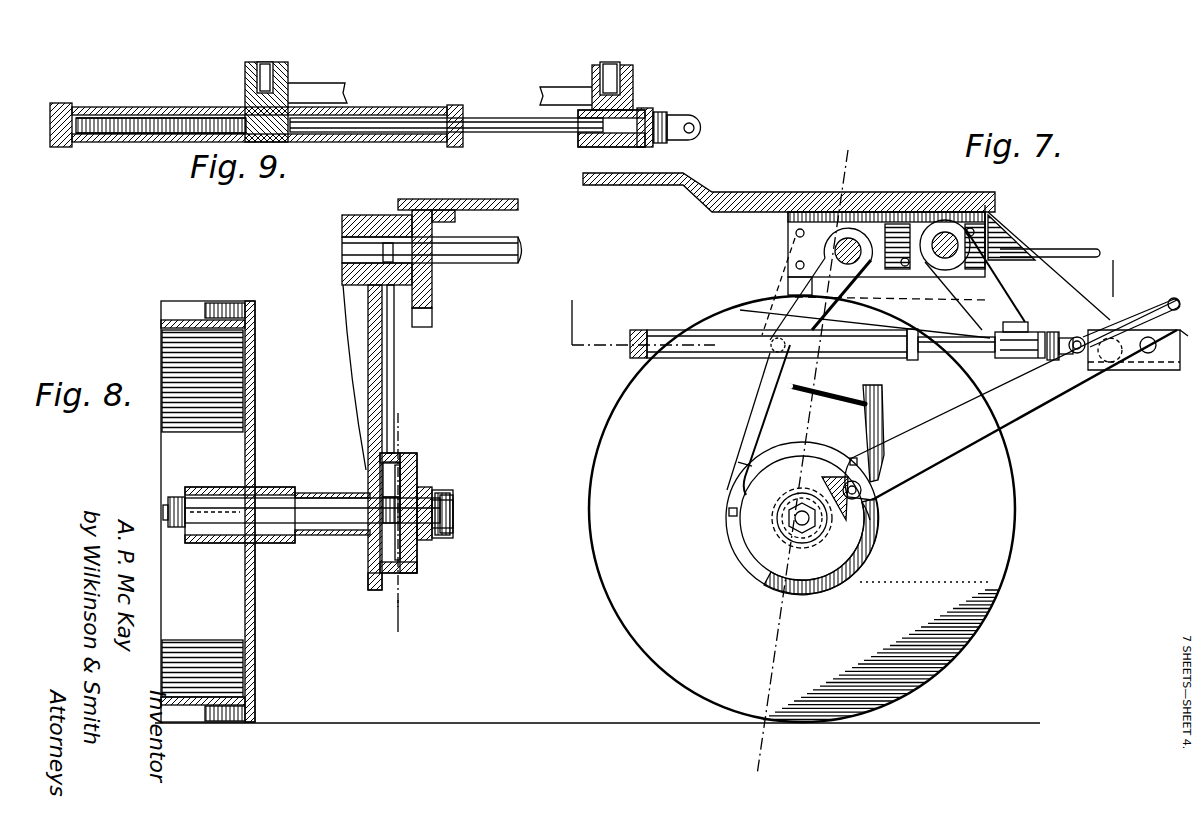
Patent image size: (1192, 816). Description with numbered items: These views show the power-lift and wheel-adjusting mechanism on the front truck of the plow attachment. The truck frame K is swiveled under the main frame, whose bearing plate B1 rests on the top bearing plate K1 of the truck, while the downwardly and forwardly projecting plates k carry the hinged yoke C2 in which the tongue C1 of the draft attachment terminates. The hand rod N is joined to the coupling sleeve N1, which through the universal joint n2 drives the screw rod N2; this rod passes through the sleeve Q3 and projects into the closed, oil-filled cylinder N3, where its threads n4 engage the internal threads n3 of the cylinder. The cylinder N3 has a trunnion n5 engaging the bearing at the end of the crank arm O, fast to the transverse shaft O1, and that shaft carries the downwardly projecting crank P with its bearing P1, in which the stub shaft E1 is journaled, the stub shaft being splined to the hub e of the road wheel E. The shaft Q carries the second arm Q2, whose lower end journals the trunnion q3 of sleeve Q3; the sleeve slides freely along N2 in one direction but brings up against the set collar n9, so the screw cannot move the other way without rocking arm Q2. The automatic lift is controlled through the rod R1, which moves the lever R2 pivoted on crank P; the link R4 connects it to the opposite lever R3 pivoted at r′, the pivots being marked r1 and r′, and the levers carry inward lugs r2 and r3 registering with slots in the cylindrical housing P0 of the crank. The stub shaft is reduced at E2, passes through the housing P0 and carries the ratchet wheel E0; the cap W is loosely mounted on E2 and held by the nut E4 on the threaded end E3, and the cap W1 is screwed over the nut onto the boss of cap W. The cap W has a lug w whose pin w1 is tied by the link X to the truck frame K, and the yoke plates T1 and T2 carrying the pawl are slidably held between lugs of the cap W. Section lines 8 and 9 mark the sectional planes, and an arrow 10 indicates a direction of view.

In FIG. 9, the trunnion n5 is at (257, 58).
In FIG. 7, the trunnion n5 is at (770, 358).
In FIG. 9, the screw threads n3 is at (247, 112).
In FIG. 9, the screw threads n4 is at (110, 138).
In FIG. 9, the crank arm O is at (290, 78).
In FIG. 7, the crank arm O is at (812, 287).
In FIG. 9, the closed cylinder N3 is at (357, 136).
In FIG. 7, the closed cylinder N3 is at (672, 328).
In FIG. 9, the second arm Q2 is at (547, 87).
In FIG. 7, the second arm Q2 is at (1018, 320).
In FIG. 9, the trunnion q3 is at (620, 60).
In FIG. 9, the set collar n9 is at (657, 108).
In FIG. 7, the set collar n9 is at (1062, 330).
In FIG. 9, the universal joint n2 is at (687, 118).
In FIG. 7, the universal joint n2 is at (1078, 356).
In FIG. 9, the rod (screw) N2 is at (528, 128).
In FIG. 7, the rod (screw) N2 is at (958, 355).
In FIG. 9, the sleeve Q3 is at (593, 147).
In FIG. 7, the sleeve Q3 is at (1015, 360).
In FIG. 8, the top bearing plate K1 is at (470, 170).
In FIG. 7, the top bearing plate K1 is at (995, 205).
In FIG. 8, the transverse shaft O1 is at (488, 265).
In FIG. 7, the transverse shaft O1 is at (835, 245).
In FIG. 8, the truck frame K is at (432, 280).
In FIG. 7, the truck frame K is at (788, 215).
In FIG. 8, the plates k is at (432, 325).
In FIG. 7, the plates k is at (1015, 233).
In FIG. 8, the lever R2 is at (395, 375).
In FIG. 7, the lever R2 is at (884, 425).
In FIG. 8, the link R4 is at (398, 397).
In FIG. 7, the link R4 is at (830, 396).
In FIG. 8, the crank arm P is at (392, 420).
In FIG. 7, the crank arm P is at (760, 548).
In FIG. 8, the cylindrical housing P0 is at (403, 440).
In FIG. 7, the cylindrical housing P0 is at (855, 560).
In FIG. 8, the cap W is at (413, 465).
In FIG. 7, the cap W is at (755, 522).
In FIG. 8, the reduced portion of shaft E2 is at (417, 497).
In FIG. 8, the cap W1 is at (455, 492).
In FIG. 7, the cap W1 is at (775, 528).
In FIG. 8, the screw-threaded end E3 is at (455, 510).
In FIG. 8, the nut E4 is at (453, 530).
In FIG. 7, the nut E4 is at (785, 575).
In FIG. 8, the hub e is at (265, 487).
In FIG. 8, the stub shaft E1 is at (313, 495).
In FIG. 8, the ratchet wheel E0 is at (383, 507).
In FIG. 8, the bearing P1 is at (323, 533).
In FIG. 8, the plate of yoke T1 is at (403, 550).
In FIG. 8, the plate of yoke T2 is at (373, 563).
In FIG. 8, the road wheel E is at (262, 658).
In FIG. 7, the road wheel E is at (1020, 530).
In FIG. 8, the view arrow 10 is at (360, 637).
In FIG. 7, the bearing plate B1 is at (748, 192).
In FIG. 7, the shaft Q is at (948, 233).
In FIG. 7, the rod R1 is at (1085, 249).
In FIG. 7, the rod N is at (1176, 298).
In FIG. 7, the coupling sleeve N1 is at (1170, 334).
In FIG. 7, the section line 9— 9 is at (839, 309).
In FIG. 7, the section line 8— 8 is at (805, 150).
In FIG. 7, the lever R3 is at (770, 415).
In FIG. 7, the lug r3 is at (745, 465).
In FIG. 7, the lug r1 is at (729, 512).
In FIG. 7, the lug w is at (838, 470).
In FIG. 7, the pivot r′ is at (860, 460).
In FIG. 7, the lug r2 is at (865, 497).
In FIG. 7, the pin w1 is at (878, 517).
In FIG. 7, the link X is at (1040, 415).
In FIG. 7, the tongue C1 is at (1118, 372).
In FIG. 7, the yoke C2 is at (1180, 372).